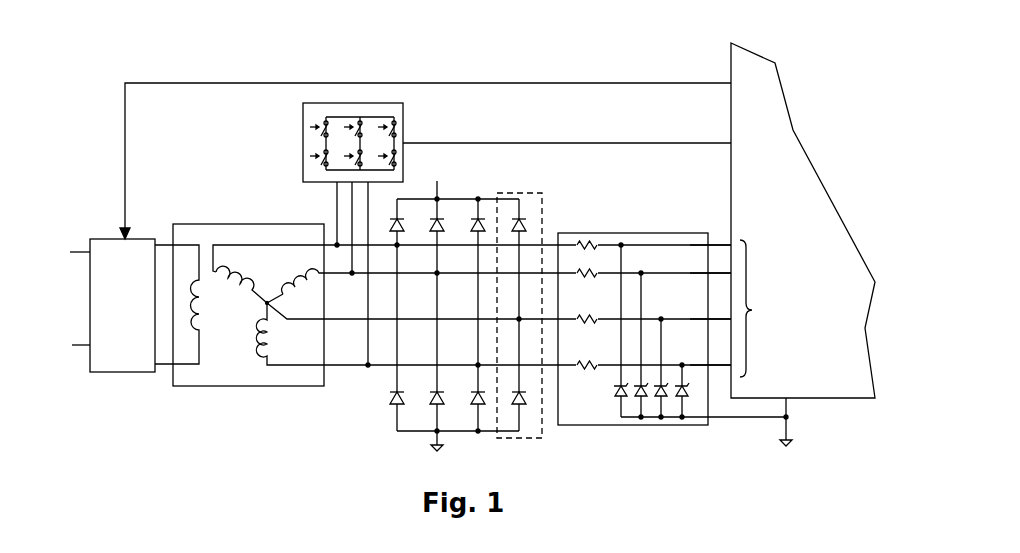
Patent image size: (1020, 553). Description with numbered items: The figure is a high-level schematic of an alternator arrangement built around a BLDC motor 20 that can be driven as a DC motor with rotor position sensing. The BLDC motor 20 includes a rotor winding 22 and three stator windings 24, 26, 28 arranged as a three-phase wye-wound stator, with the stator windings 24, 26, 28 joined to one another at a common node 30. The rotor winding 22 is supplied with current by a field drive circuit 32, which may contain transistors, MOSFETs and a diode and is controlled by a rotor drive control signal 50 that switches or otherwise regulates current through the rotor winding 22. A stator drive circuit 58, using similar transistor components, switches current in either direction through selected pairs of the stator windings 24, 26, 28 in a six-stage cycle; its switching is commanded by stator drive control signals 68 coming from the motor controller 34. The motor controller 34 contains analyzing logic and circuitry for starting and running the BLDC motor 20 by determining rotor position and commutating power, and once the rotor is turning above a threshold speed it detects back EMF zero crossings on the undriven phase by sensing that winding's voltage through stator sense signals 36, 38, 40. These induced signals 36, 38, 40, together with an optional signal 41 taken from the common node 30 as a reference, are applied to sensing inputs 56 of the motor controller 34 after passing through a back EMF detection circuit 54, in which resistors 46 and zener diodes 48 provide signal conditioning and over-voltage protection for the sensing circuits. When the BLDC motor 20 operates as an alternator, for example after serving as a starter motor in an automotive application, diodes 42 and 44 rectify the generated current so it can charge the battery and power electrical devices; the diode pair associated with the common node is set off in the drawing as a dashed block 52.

The BLDC motor 20 is at (108, 50).
The rotor winding 22 is at (206, 313).
The stator winding 24 is at (243, 284).
The stator winding 26 is at (306, 283).
The stator winding 28 is at (257, 346).
The common node 30 is at (269, 306).
The field drive circuit 32 is at (88, 311).
The motor controller 34 is at (731, 170).
The stator sense signal 36 is at (697, 246).
The stator sense signal 38 is at (697, 274).
The stator sense signal 40 is at (673, 366).
The signal from common node 41 is at (700, 320).
The diodes 42 is at (540, 216).
The diodes 44 is at (380, 398).
The resistors 46 is at (603, 220).
The zener diodes 48 is at (605, 392).
The rotor drive control signal 50 is at (145, 83).
The neutral diode pair 52 is at (513, 193).
The back EMF detection circuit 54 is at (663, 233).
The sensing inputs 56 is at (760, 308).
The stator drive circuit 58 is at (303, 115).
The stator drive control signals 68 is at (500, 143).